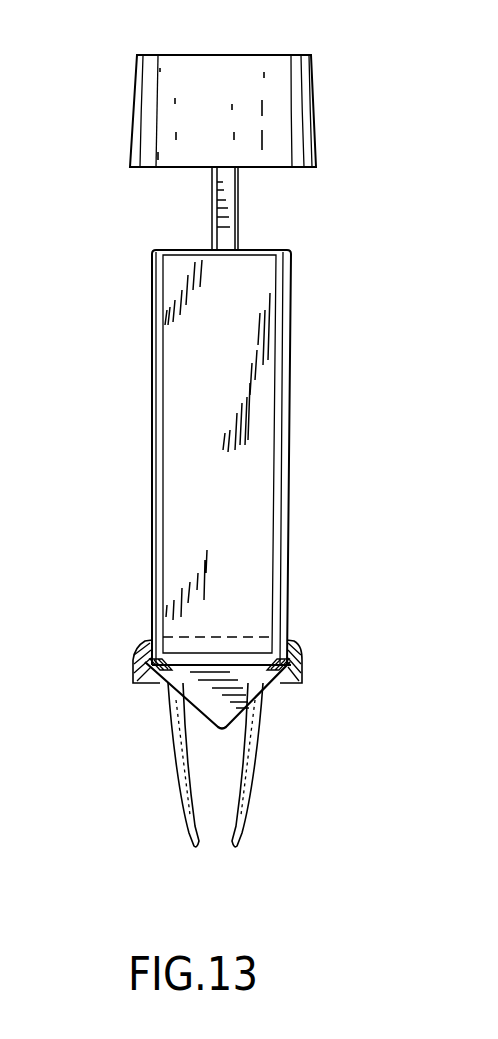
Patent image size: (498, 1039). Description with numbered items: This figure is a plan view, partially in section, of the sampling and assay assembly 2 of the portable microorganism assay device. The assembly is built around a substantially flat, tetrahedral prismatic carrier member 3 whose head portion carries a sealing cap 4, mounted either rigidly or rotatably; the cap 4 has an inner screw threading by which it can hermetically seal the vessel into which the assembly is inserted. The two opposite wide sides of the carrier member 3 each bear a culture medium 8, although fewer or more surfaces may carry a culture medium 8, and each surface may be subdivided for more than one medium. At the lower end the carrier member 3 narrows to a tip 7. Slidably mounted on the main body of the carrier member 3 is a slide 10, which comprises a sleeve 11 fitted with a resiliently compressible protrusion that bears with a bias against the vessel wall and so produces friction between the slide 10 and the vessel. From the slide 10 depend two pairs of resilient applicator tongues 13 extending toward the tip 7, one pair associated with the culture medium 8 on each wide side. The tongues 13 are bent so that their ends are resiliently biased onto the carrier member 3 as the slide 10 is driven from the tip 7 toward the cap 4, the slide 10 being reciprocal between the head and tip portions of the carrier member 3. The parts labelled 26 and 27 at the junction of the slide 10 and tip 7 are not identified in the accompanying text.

The sampling and assay assembly 2 is at (142, 353).
The carrier member 3 is at (258, 415).
The sealing cap 4 is at (208, 65).
The tip 7 is at (218, 707).
The culture medium 8 is at (228, 380).
The slide 10 is at (293, 763).
The sleeve 11 is at (285, 642).
The applicator tongues 13 is at (182, 822).
The hinge joints 26 is at (150, 684).
The flanges 27 is at (133, 661).